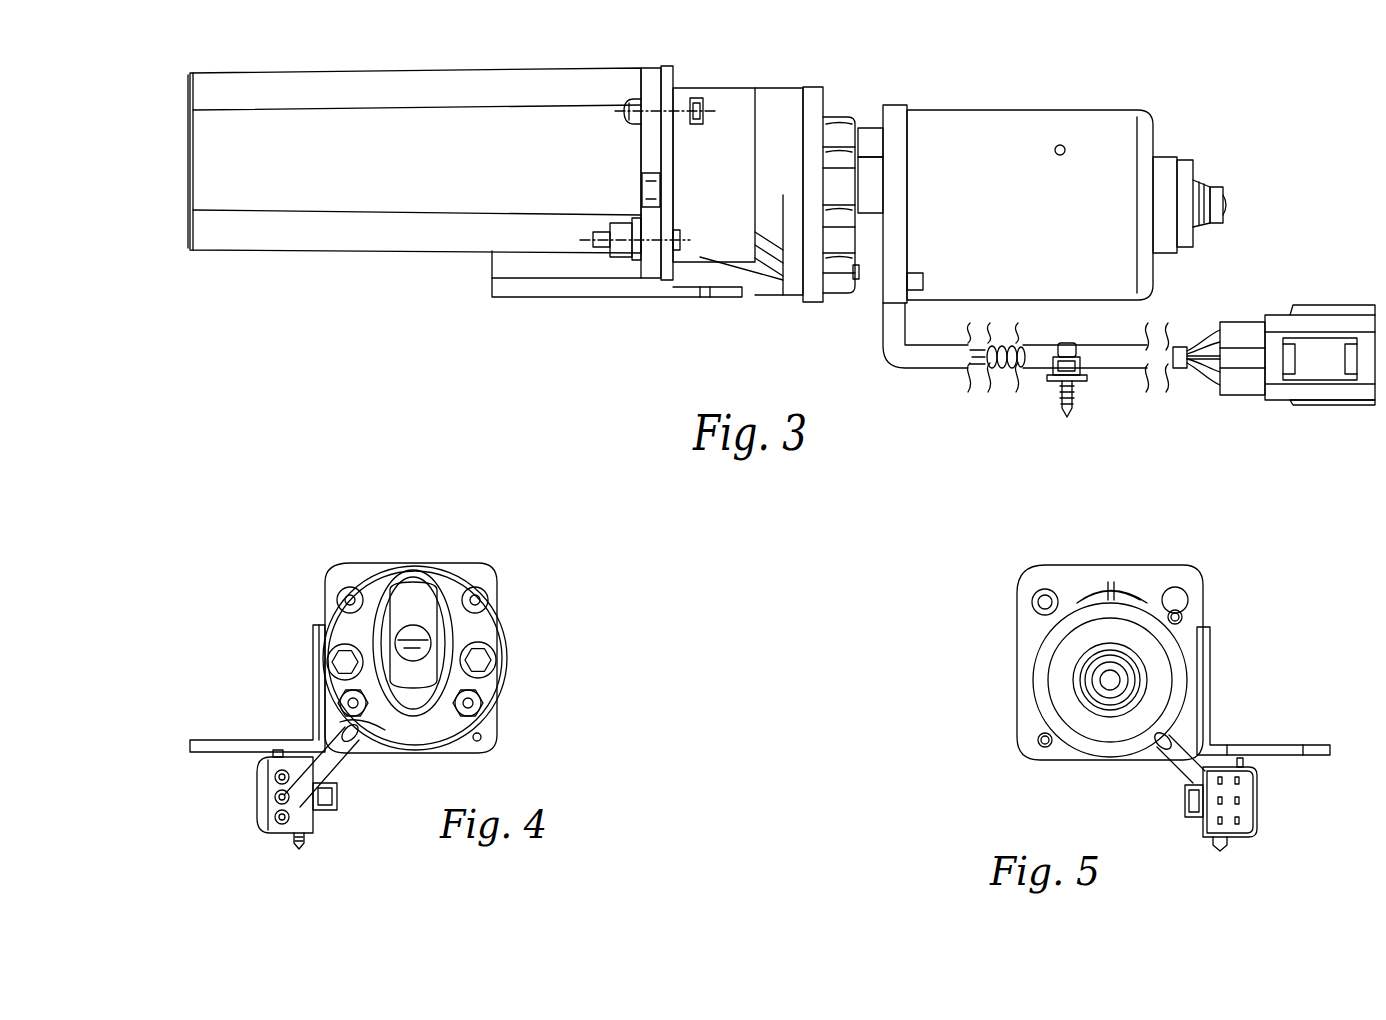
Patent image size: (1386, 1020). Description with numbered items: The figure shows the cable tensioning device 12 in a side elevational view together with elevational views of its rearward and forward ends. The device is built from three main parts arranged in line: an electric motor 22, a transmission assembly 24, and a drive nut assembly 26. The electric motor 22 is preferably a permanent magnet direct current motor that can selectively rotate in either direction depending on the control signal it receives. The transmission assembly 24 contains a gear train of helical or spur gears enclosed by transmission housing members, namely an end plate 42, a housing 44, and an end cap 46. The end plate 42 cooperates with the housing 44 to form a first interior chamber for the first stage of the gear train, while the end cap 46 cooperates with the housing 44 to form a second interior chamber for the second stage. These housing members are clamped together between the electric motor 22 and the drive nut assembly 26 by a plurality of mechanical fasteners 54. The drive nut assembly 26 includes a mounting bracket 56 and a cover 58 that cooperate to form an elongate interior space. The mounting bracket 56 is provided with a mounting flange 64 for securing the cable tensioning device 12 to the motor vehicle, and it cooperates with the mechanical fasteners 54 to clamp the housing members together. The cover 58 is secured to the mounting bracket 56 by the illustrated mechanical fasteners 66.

In FIG. 3, the cable tensioning device 12 is at (506, 340).
In FIG. 4, the cable tensioning device 12 is at (414, 516).
In FIG. 5, the cable tensioning device 12 is at (1188, 550).
In FIG. 3, the electric motor 22 is at (965, 108).
In FIG. 5, the electric motor 22 is at (1063, 755).
In FIG. 3, the transmission assembly 24 is at (778, 85).
In FIG. 3, the drive nut assembly 26 is at (442, 64).
In FIG. 3, the end plate 42 is at (813, 304).
In FIG. 3, the housing 44 is at (790, 297).
In FIG. 3, the end cap 46 is at (737, 266).
In FIG. 4, the mechanical fasteners 54 is at (335, 642).
In FIG. 3, the mounting bracket 56 is at (668, 65).
In FIG. 3, the cover 58 is at (352, 72).
In FIG. 4, the mounting flange 64 is at (245, 740).
In FIG. 5, the mounting flange 64 is at (1263, 745).
In FIG. 3, the mechanical fasteners 66 is at (626, 102).
In FIG. 4, the mechanical fasteners 66 is at (350, 584).